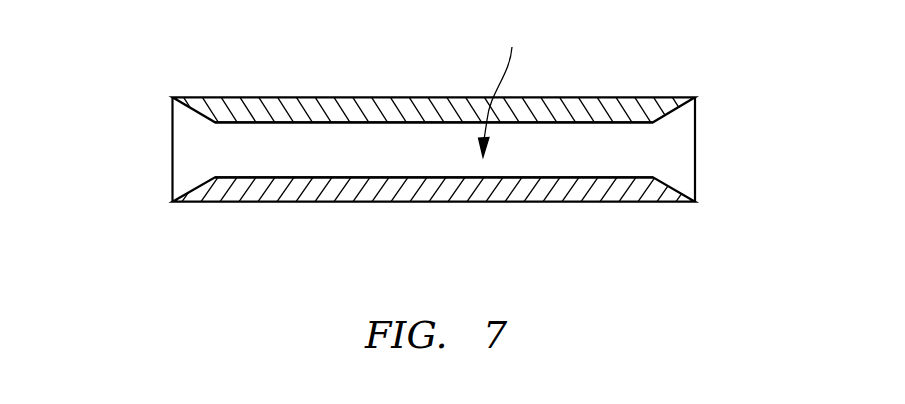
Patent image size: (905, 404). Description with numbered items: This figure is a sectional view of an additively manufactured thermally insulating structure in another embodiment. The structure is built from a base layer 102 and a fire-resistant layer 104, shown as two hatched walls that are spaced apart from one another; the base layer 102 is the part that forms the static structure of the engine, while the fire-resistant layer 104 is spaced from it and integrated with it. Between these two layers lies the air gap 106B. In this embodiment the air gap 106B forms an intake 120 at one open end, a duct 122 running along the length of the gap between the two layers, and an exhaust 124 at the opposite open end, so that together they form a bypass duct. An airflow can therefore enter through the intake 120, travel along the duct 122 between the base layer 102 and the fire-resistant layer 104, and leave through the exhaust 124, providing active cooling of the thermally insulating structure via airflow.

The base layer 102 is at (363, 196).
The fire-resistant layer 104 is at (390, 108).
The air gap 106B is at (512, 86).
The intake 120 is at (193, 151).
The duct 122 is at (580, 157).
The exhaust 124 is at (672, 148).